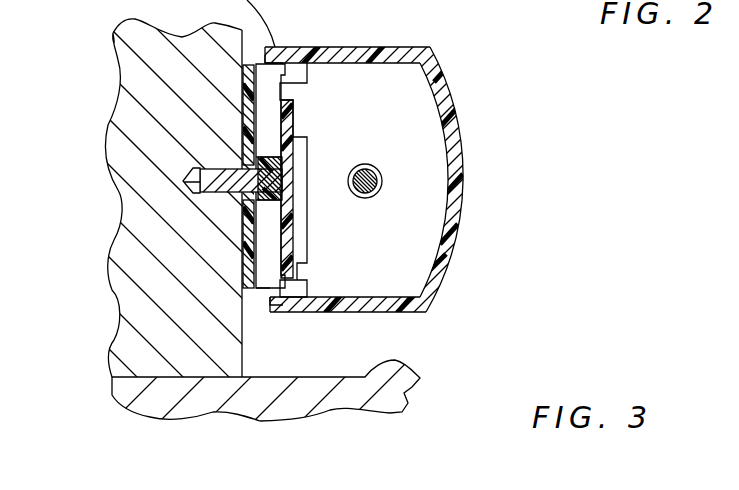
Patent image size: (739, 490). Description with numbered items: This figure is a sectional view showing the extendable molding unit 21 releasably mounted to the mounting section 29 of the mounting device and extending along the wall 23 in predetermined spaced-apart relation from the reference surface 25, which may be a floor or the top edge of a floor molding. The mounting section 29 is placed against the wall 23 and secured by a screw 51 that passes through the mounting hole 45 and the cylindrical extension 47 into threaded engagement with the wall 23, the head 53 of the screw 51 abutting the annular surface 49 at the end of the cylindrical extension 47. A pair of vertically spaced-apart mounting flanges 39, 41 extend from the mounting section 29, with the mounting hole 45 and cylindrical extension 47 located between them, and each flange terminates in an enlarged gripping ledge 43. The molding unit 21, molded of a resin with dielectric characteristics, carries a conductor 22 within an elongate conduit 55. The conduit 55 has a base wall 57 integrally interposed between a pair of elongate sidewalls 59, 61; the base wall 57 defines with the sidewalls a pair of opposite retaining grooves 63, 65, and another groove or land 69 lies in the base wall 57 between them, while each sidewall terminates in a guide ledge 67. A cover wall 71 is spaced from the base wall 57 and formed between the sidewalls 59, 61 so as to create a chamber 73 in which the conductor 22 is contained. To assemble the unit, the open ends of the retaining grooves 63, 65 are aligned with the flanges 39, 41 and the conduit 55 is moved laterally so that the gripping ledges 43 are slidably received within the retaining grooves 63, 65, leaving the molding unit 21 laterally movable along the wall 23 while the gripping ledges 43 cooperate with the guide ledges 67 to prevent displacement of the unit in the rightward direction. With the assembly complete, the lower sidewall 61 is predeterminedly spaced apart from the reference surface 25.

The extendable molding unit 21 is at (369, 245).
The conductor 22 is at (383, 180).
The wall 23 is at (140, 32).
The reference surface 25 is at (420, 378).
The mounting section 29 is at (250, 103).
The mounting flange 39 is at (255, 67).
The mounting flange 41 is at (262, 288).
The gripping ledge 43 is at (288, 298).
The mounting hole 45 is at (247, 162).
The cylindrical extension 47 is at (265, 153).
The annular surface 49 is at (273, 195).
The screw 51 is at (200, 182).
The head 53 is at (290, 195).
The conduit 55 is at (461, 290).
The base wall 57 is at (280, 256).
The sidewall 59 is at (370, 47).
The sidewall 61 is at (377, 313).
The retaining groove 63 is at (292, 84).
The retaining groove 65 is at (288, 283).
The guide ledge 67 is at (272, 302).
The land 69 is at (283, 153).
The cover wall 71 is at (462, 206).
The chamber 73 is at (414, 134).